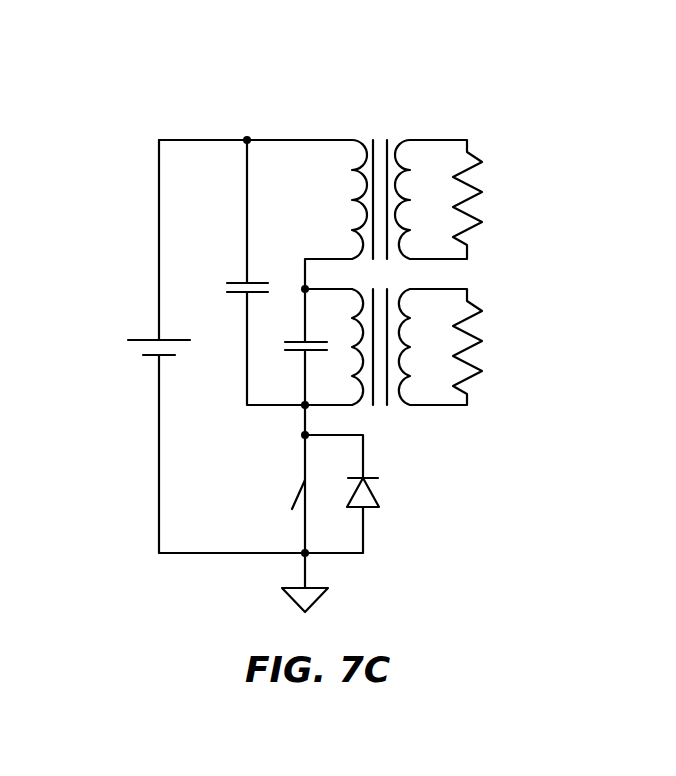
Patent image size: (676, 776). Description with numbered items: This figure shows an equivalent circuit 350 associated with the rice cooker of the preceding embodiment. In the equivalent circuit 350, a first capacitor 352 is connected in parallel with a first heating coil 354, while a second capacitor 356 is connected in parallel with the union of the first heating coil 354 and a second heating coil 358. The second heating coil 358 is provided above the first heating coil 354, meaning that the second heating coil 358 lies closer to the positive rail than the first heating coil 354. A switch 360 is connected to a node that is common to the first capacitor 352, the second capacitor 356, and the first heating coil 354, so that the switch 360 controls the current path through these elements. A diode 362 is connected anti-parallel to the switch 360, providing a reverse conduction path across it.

The equivalent circuit 350 is at (378, 67).
The first capacitor 352 is at (294, 341).
The first heating coil 354 is at (362, 400).
The second capacitor 356 is at (240, 282).
The second heating coil 358 is at (358, 141).
The switch 360 is at (298, 493).
The diode 362 is at (372, 478).